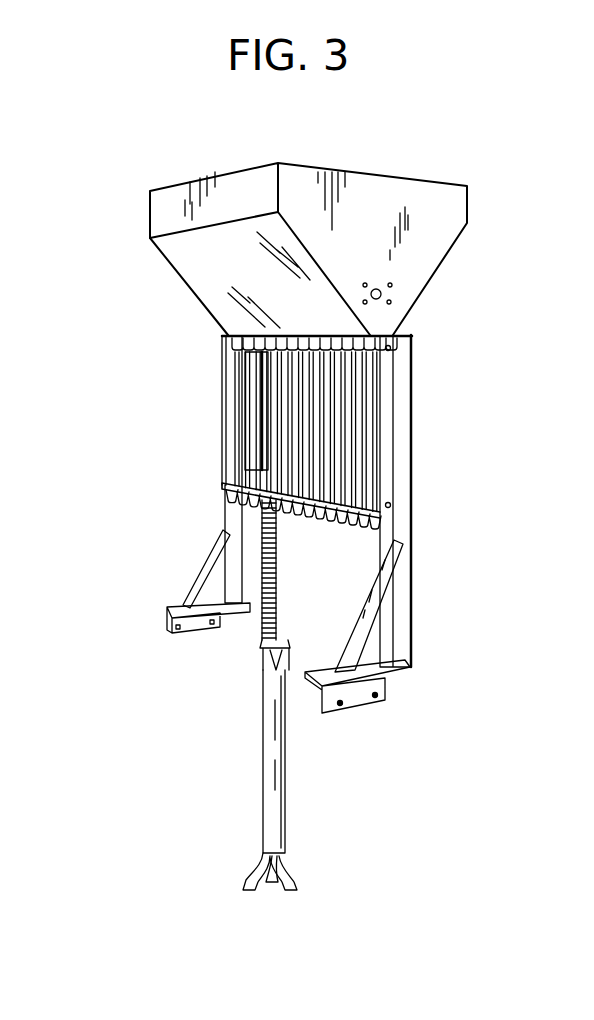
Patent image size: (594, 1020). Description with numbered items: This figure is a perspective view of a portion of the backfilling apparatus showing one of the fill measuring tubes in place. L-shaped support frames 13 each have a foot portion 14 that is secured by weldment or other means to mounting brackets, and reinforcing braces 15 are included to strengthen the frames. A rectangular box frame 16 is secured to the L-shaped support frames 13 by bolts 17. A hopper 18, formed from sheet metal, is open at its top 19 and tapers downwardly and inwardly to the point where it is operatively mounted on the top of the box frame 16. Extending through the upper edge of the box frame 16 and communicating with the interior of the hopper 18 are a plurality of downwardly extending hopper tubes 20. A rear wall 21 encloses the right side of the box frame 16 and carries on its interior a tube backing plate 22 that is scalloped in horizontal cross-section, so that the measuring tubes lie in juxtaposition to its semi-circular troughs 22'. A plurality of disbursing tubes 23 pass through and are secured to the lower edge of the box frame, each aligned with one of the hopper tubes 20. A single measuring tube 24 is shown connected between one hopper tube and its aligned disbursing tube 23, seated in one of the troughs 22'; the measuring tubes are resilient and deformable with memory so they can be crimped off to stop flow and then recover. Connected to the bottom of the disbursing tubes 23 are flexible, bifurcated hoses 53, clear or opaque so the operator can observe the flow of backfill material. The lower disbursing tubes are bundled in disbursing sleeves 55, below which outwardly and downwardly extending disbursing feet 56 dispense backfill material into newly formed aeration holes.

The L-shaped support frame 13 is at (363, 442).
The foot portion 14 is at (385, 673).
The reinforcing brace 15 is at (368, 612).
The rectangular box frame 16 is at (398, 366).
The bolt 17 is at (405, 335).
The hopper 18 is at (192, 262).
The top 19 is at (428, 183).
The hopper tube 20 is at (257, 376).
The rear wall 21 is at (248, 463).
The tube backing plate 22 is at (387, 431).
The semi-circular trough 22' is at (402, 430).
The disbursing tube 23 is at (250, 503).
The measuring tube 24 is at (257, 403).
The flexible hose 53 is at (262, 628).
The disbursing sleeve 55 is at (268, 793).
The disbursing foot 56 is at (300, 880).